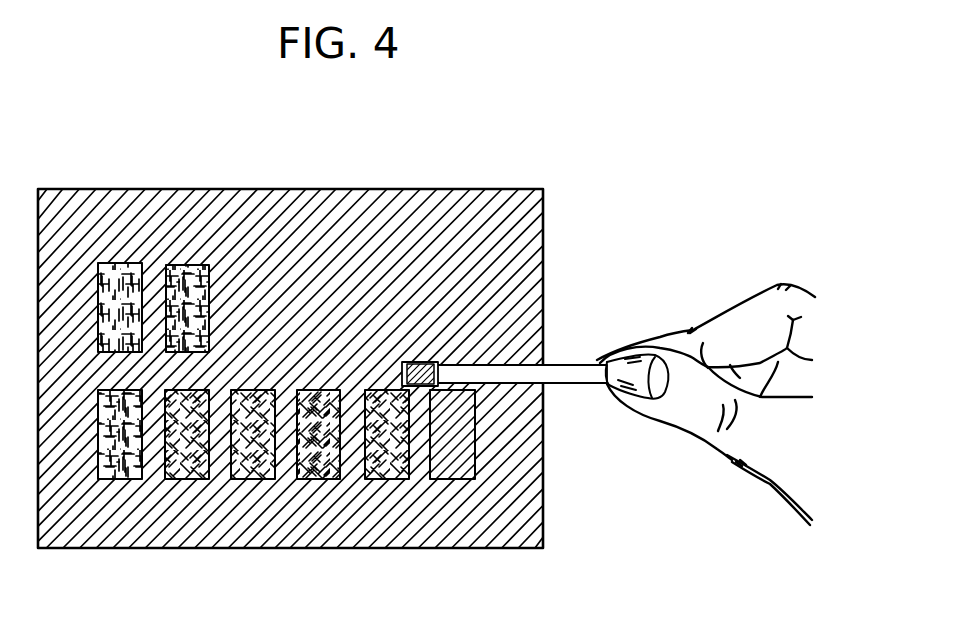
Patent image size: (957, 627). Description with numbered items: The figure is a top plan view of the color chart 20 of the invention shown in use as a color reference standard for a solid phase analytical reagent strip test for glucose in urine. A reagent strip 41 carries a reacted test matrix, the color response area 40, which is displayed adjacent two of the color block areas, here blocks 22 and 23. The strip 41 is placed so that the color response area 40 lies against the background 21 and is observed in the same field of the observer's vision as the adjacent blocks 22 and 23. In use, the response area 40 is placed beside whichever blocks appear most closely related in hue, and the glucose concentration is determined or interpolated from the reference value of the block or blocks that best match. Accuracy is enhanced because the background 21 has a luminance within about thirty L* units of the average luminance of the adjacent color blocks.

The color chart 20 is at (148, 188).
The background 21 is at (529, 256).
The color block area 22 is at (453, 479).
The color block area 23 is at (385, 479).
The color response area 40 is at (419, 361).
The reagent strip 41 is at (572, 387).